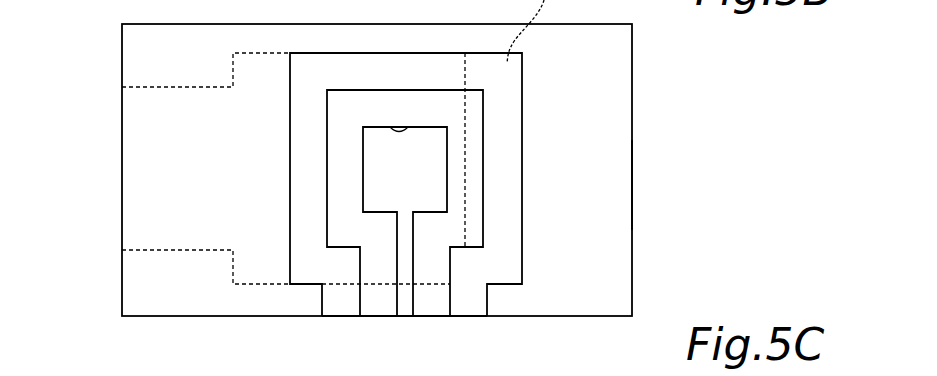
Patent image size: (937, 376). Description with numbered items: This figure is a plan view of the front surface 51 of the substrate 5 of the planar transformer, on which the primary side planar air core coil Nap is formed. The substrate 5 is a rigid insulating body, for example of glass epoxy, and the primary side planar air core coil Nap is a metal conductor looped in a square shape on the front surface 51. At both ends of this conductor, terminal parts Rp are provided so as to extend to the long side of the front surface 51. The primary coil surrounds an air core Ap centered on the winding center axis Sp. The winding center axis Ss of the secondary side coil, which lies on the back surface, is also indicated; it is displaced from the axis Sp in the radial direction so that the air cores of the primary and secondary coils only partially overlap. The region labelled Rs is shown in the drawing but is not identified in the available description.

The substrate 5 is at (633, 92).
The front surface 51 is at (620, 182).
The primary side planar air core coil Nap is at (257, 275).
The outer electrode region Rs is at (137, 236).
The winding center axis Ss is at (350, 170).
The winding center axis Sp is at (407, 170).
The air core Ap is at (405, 126).
The terminal parts Rp is at (343, 300).